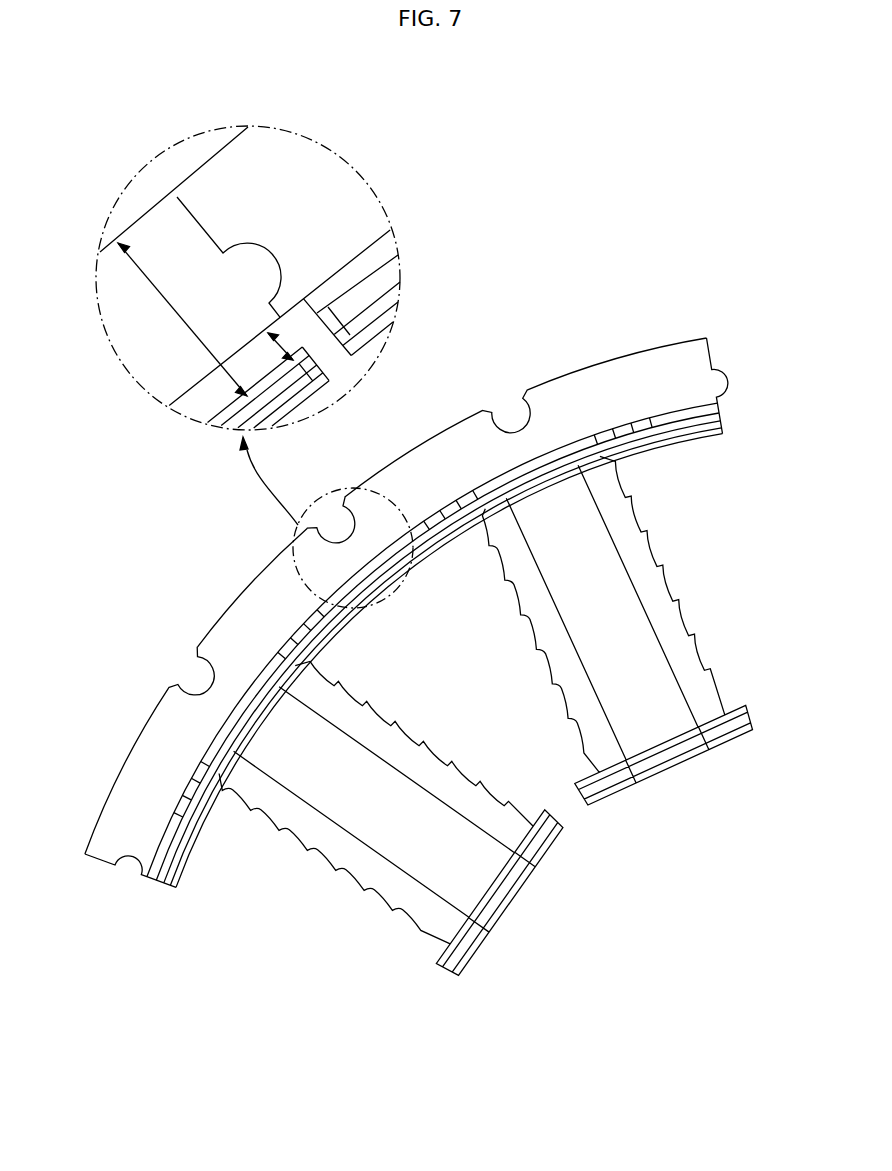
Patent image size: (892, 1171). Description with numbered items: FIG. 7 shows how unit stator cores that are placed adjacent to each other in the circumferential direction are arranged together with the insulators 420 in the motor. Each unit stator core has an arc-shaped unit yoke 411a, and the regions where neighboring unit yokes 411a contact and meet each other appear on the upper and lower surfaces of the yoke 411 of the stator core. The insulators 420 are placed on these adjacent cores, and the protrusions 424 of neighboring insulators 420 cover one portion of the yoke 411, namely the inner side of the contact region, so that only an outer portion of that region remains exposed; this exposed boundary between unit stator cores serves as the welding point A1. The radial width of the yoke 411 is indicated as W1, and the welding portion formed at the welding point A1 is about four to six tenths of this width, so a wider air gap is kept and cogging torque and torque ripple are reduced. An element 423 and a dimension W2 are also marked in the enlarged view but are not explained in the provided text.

The yoke 411 is at (177, 520).
The unit yoke 411a is at (273, 162).
The insulator 423 is at (385, 252).
The protrusion 424 is at (305, 322).
The insulator 420 is at (722, 595).
The welding point A1 is at (190, 207).
The width of the yoke in the radial direction W1 is at (182, 319).
The second width W2 is at (260, 333).